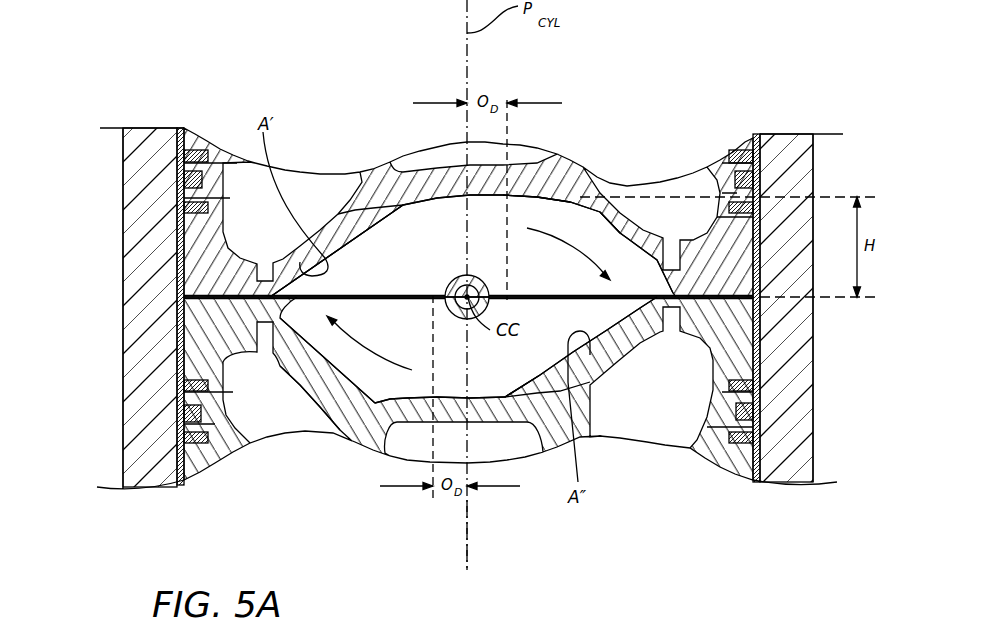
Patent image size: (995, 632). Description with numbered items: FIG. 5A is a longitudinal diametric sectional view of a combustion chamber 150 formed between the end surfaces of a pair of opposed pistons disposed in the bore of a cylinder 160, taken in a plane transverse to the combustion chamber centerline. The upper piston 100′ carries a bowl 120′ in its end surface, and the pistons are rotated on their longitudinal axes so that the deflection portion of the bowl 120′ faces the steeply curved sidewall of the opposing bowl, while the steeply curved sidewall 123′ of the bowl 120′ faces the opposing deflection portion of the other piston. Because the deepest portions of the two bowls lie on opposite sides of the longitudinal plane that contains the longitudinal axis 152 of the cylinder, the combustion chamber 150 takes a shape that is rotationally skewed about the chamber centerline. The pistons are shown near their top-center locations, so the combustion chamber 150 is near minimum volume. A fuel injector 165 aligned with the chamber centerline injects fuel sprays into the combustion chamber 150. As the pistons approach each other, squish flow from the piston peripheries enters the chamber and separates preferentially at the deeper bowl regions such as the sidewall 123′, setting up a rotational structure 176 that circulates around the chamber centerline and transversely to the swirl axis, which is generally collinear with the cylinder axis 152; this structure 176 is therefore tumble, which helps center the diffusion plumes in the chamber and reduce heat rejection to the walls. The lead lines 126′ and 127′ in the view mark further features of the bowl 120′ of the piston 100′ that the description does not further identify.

The piston 100′ is at (185, 248).
The bowl 120′ is at (410, 277).
The steeply curved sidewall 123′ is at (611, 228).
The first piston crown underside 126′ is at (507, 197).
The first piston strut 127′ is at (345, 258).
The combustion chamber 150 is at (420, 218).
The longitudinal axis of the cylinder 152 is at (467, 537).
The cylinder 160 is at (123, 360).
The fuel injector 165 is at (467, 296).
The rotational structure 176 is at (577, 247).